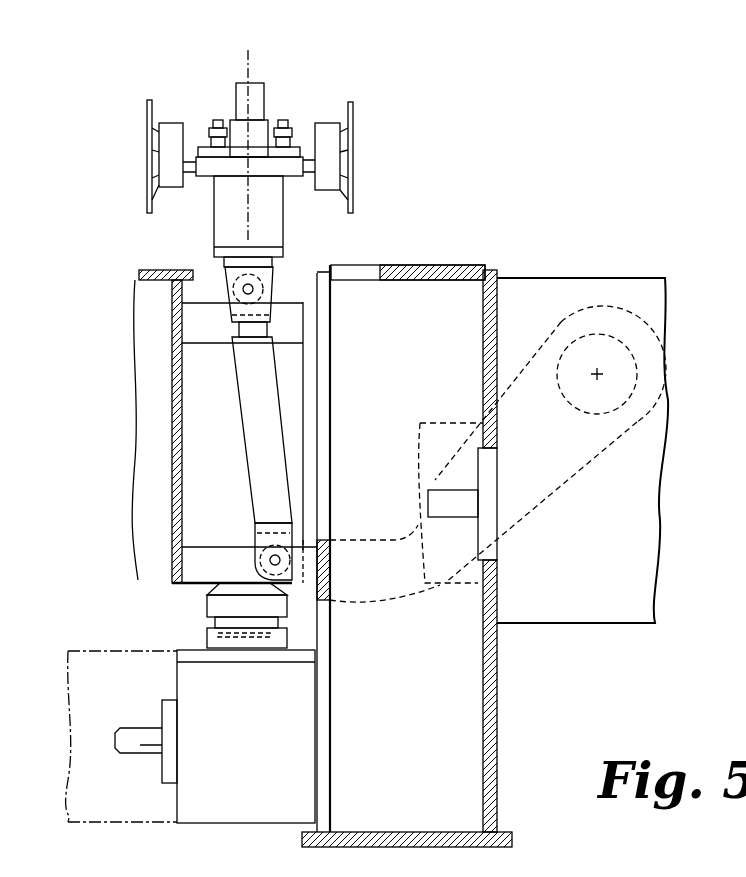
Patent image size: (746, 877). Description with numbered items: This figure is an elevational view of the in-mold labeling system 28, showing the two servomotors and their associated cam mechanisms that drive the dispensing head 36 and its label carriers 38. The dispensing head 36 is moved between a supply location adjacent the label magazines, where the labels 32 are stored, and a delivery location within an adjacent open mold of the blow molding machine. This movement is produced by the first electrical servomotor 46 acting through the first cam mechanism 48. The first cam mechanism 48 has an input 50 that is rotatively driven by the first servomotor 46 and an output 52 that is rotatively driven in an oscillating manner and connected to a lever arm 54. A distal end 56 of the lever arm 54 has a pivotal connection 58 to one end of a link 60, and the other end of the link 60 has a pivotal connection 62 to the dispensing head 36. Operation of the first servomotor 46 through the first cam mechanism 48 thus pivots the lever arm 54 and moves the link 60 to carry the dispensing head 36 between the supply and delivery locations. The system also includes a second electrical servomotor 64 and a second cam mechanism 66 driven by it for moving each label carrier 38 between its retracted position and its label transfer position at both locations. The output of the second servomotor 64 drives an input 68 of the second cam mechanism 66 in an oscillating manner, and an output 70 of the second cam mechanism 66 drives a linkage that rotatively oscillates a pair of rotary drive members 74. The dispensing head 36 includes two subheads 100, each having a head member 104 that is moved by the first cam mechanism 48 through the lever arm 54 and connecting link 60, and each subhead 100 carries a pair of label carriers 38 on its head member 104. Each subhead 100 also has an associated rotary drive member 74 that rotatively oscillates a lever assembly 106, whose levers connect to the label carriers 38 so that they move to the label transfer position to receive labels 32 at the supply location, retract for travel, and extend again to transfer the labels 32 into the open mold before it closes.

The in-mold labeling system 28 is at (540, 171).
The labels 32 is at (147, 150).
The dispensing head 36 is at (308, 141).
The label carrier 38 is at (172, 123).
The first electrical servomotor 46 is at (460, 423).
The first cam mechanism 48 is at (605, 610).
The input 50 is at (457, 517).
The output 52 is at (600, 337).
The lever arm 54 is at (540, 505).
The distal end 56 is at (303, 545).
The pivotal connection 58 is at (270, 560).
The link 60 is at (243, 463).
The pivotal connection 62 is at (240, 290).
The second electrical servomotor 64 is at (92, 822).
The second cam mechanism 66 is at (260, 823).
The input 68 is at (138, 757).
The output 70 is at (207, 633).
The rotary drive member 74 is at (258, 100).
The subhead 100 is at (318, 168).
The head member 104 is at (203, 180).
The lever assembly 106 is at (224, 109).